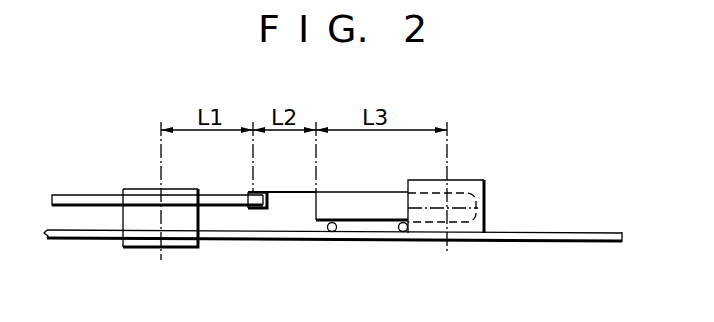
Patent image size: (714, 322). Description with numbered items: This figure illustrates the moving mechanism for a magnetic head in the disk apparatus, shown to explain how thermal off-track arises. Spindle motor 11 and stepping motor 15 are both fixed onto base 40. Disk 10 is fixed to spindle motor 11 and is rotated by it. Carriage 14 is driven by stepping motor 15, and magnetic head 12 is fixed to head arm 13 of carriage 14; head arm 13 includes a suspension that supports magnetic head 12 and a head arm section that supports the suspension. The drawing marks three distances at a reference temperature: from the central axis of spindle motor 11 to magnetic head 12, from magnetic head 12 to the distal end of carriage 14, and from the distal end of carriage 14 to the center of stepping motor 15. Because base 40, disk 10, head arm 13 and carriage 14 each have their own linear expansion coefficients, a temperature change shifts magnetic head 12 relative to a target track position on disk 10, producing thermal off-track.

The disk 10 is at (89, 195).
The spindle motor 11 is at (128, 248).
The magnetic head 12 is at (259, 204).
The head arm 13 is at (282, 192).
The carriage 14 is at (358, 205).
The stepping motor 15 is at (476, 180).
The base 40 is at (567, 233).